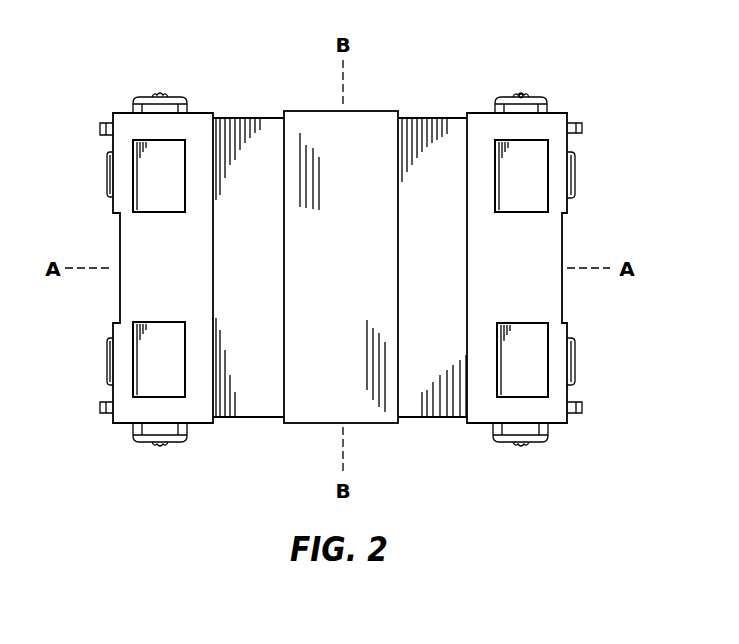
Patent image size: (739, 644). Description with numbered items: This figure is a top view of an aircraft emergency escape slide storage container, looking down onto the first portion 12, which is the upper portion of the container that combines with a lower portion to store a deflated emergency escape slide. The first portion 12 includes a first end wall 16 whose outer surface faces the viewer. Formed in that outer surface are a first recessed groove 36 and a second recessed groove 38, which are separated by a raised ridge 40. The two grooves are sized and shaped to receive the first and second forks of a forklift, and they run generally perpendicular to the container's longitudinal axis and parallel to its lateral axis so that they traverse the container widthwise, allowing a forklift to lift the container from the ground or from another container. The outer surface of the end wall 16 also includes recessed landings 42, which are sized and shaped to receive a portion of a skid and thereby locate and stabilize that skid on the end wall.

The first portion 12 is at (355, 122).
The first end wall 16 is at (368, 165).
The first recessed groove 36 is at (263, 407).
The second recessed groove 38 is at (435, 362).
The raised ridge 40 is at (323, 407).
The recessed landing 42 is at (155, 180).